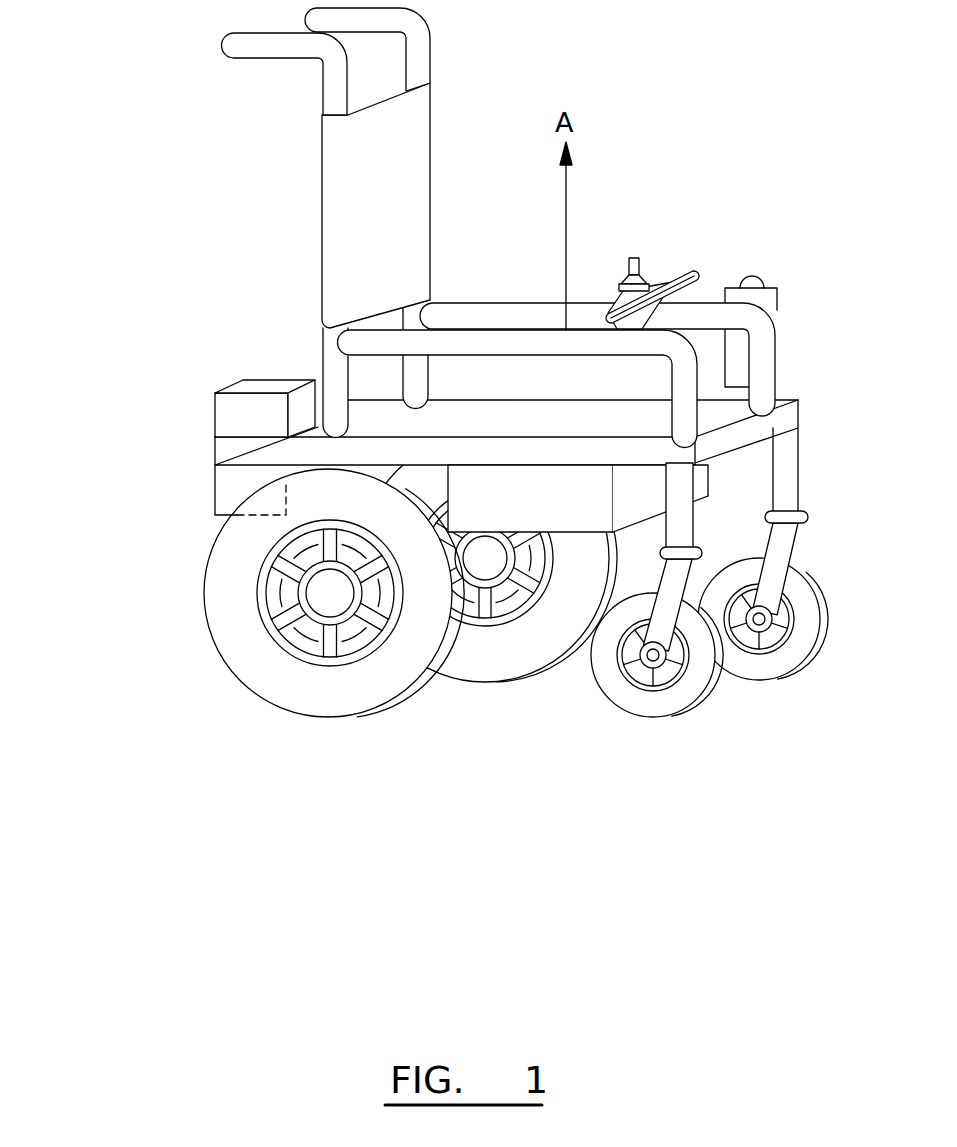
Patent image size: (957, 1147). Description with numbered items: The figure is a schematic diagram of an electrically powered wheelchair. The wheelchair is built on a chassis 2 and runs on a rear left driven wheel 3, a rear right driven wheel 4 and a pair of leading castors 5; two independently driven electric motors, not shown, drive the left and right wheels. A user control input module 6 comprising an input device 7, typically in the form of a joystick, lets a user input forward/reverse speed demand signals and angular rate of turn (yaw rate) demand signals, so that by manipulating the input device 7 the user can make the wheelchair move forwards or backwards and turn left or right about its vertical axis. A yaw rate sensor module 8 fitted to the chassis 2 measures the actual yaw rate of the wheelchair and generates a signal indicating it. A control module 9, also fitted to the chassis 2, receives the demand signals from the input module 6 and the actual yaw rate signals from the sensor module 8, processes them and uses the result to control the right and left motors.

The chassis 2 is at (215, 460).
The rear left driven wheel 3 is at (495, 655).
The rear right driven wheel 4 is at (297, 683).
The leading castors 5 is at (652, 705).
The user control input module 6 is at (693, 272).
The input device 7 is at (636, 258).
The yaw rate sensor module 8 is at (260, 385).
The control module 9 is at (213, 491).